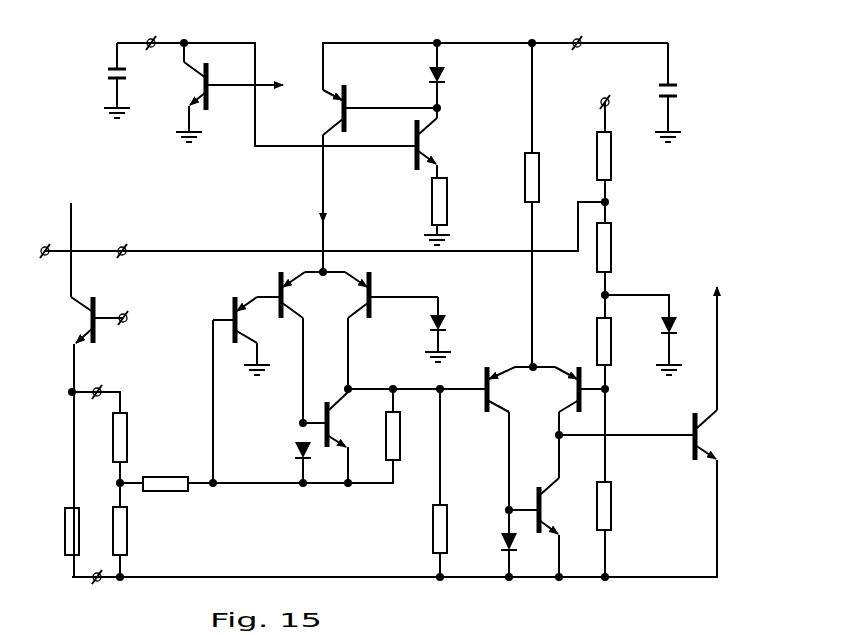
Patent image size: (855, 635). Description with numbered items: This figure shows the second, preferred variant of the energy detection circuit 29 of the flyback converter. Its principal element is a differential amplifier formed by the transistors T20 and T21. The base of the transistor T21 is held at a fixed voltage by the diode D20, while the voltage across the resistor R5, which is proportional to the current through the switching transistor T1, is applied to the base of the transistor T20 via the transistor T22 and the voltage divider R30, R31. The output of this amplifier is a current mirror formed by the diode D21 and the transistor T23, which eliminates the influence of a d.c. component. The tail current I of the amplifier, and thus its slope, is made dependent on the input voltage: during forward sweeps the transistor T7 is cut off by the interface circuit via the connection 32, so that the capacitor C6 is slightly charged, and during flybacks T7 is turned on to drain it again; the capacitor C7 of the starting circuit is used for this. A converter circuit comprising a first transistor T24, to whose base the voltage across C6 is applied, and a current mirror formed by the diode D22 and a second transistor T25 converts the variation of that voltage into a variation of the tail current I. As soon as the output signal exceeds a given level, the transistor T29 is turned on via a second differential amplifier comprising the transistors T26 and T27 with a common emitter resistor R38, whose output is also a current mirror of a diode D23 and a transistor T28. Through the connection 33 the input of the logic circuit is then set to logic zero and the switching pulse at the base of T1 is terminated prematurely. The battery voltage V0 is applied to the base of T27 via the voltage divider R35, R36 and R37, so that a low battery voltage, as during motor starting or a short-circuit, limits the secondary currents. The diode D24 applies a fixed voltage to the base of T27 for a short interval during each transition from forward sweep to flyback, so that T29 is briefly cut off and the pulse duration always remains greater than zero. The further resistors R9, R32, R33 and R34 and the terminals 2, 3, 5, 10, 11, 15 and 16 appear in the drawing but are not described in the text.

The tail current I is at (331, 191).
The capacitor C6 is at (107, 72).
The terminal 5 is at (153, 60).
The transistor T7 is at (188, 87).
The connection 32 is at (284, 84).
The second transistor T25 is at (341, 110).
The diode D22 is at (446, 75).
The first transistor T24 is at (421, 150).
The common emitter resistor R38 is at (540, 180).
The terminal 15 is at (579, 60).
The capacitor C7 is at (657, 90).
The terminal 10 is at (610, 103).
The resistor R9 is at (612, 166).
The voltage divider resistor R35 is at (612, 262).
The detection circuit 29 is at (658, 221).
The voltage divider resistor R36 is at (597, 352).
The diode D24 is at (661, 325).
The connection 33 is at (715, 348).
The voltage divider resistor R37 is at (612, 492).
The transistor T29 is at (711, 434).
The transistor T28 is at (545, 517).
The diode D23 is at (502, 547).
The transistor T26 is at (490, 392).
The transistor T27 is at (576, 396).
The resistor R33 is at (401, 442).
The resistor R34 is at (432, 547).
The transistor T23 is at (336, 425).
The diode D21 is at (296, 448).
The diode D20 is at (447, 322).
The transistor T20 is at (284, 301).
The transistor T21 is at (365, 299).
The transistor T22 is at (243, 330).
The transistor T1 is at (90, 320).
The terminal 3 is at (124, 304).
The terminal 11 is at (127, 235).
The voltage across the accumulator battery V0 is at (46, 251).
The terminal 2 is at (98, 376).
The voltage divider resistor R30 is at (128, 446).
The resistor R32 is at (165, 475).
The voltage divider resistor R31 is at (128, 541).
The resistor R5 is at (64, 547).
The terminal 16 is at (100, 561).